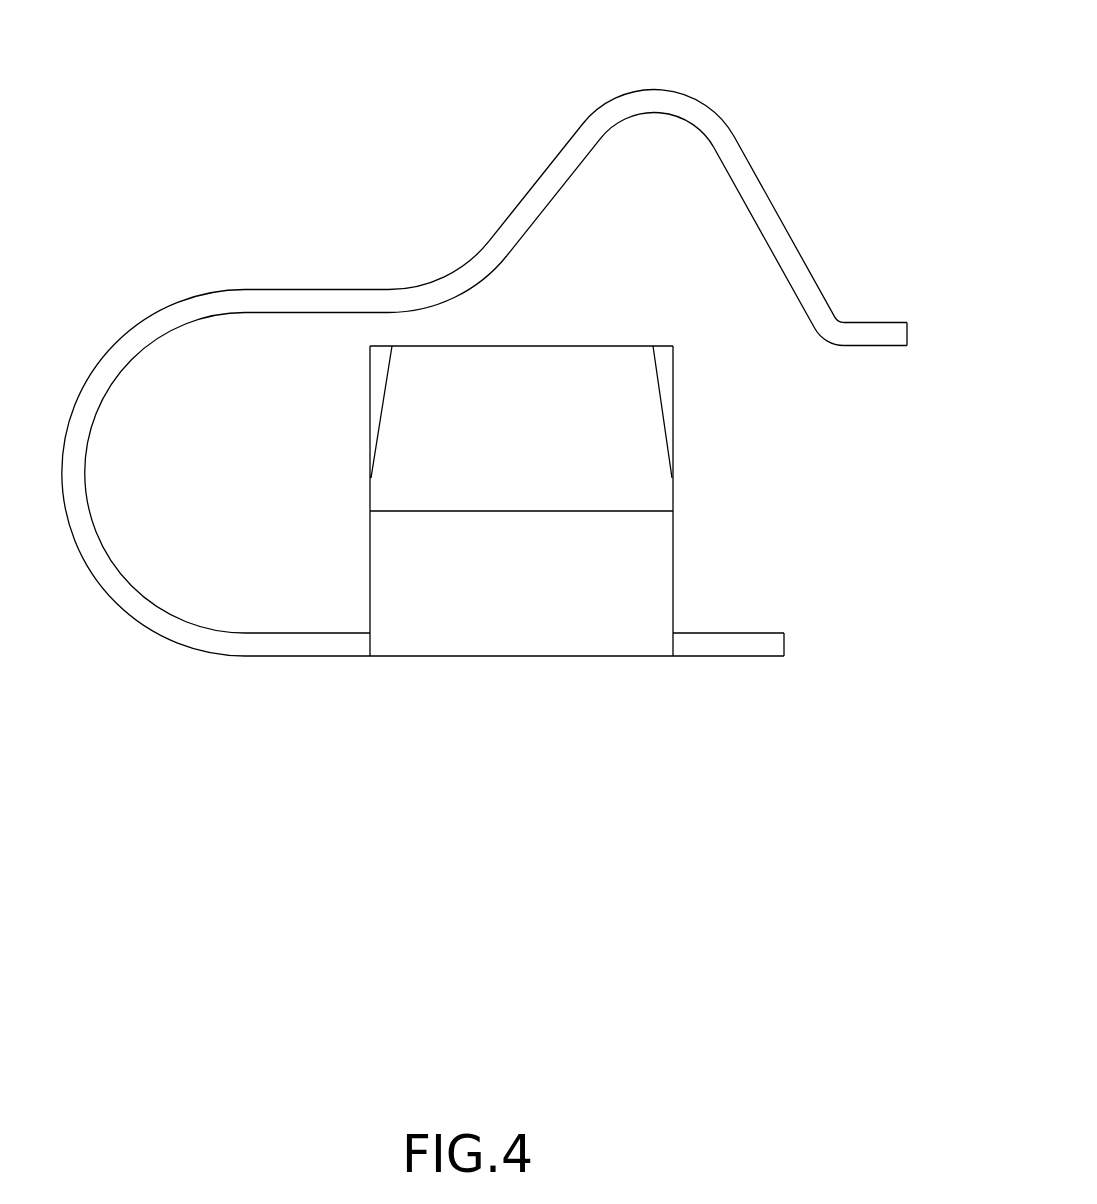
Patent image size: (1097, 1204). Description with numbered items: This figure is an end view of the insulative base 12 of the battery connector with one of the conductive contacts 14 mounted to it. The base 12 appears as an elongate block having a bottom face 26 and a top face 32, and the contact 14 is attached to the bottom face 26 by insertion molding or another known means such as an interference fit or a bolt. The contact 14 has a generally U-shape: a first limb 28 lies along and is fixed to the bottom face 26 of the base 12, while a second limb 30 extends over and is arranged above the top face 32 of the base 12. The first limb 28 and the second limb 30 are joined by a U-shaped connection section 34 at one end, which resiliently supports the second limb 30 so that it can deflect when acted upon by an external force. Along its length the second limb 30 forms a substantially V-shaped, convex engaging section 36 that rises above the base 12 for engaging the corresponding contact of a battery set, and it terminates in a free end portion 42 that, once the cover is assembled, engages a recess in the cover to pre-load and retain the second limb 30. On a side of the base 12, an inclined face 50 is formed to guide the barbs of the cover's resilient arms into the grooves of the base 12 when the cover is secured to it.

The conductive contact 14 is at (483, 383).
The second limb 30 is at (332, 298).
The U-shaped connection section 34 is at (80, 500).
The first limb 28 is at (302, 642).
The bottom face 26 is at (592, 657).
The convex engaging section 36 is at (652, 105).
The free end portion 42 is at (870, 333).
The insulative base 12 is at (587, 464).
The top face 32 is at (567, 344).
The inclined face 50 is at (658, 382).